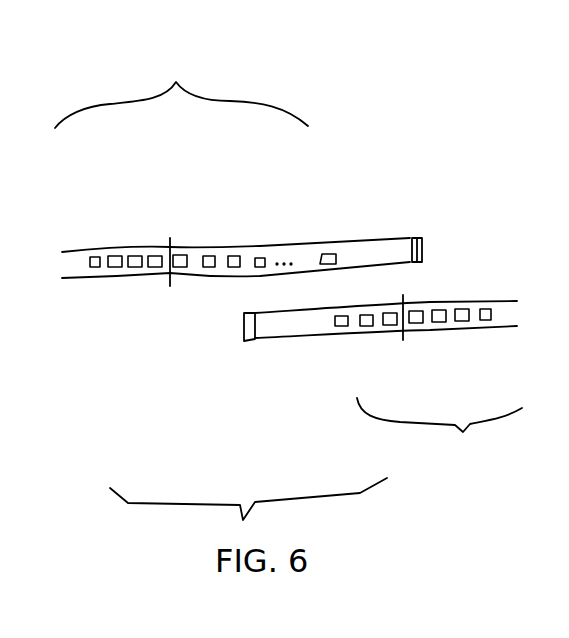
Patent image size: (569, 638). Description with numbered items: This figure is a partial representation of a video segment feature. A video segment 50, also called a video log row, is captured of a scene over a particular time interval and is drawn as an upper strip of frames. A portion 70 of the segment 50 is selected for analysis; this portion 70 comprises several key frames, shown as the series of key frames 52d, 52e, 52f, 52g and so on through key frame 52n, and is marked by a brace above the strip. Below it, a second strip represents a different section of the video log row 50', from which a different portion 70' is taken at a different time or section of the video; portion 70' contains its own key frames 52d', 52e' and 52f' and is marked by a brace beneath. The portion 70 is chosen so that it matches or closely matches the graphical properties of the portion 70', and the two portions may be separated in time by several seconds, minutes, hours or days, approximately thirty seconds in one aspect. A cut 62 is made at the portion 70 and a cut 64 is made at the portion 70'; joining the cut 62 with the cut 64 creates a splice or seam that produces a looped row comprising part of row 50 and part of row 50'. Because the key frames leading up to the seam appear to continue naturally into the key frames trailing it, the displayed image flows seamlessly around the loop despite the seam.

The video segment 50 is at (281, 235).
The video log row 50' is at (326, 337).
The key frame 52d is at (117, 234).
The key frame 52e is at (214, 234).
The key frame 52f is at (253, 234).
The key frame 52g is at (243, 255).
The key frame 52n is at (327, 253).
The key frame 52d' is at (343, 340).
The key frame 52e' is at (447, 339).
The key frame 52f' is at (489, 356).
The cut 62 is at (171, 228).
The cut 64 is at (409, 352).
The portion 70 is at (181, 84).
The portion 70' is at (439, 433).